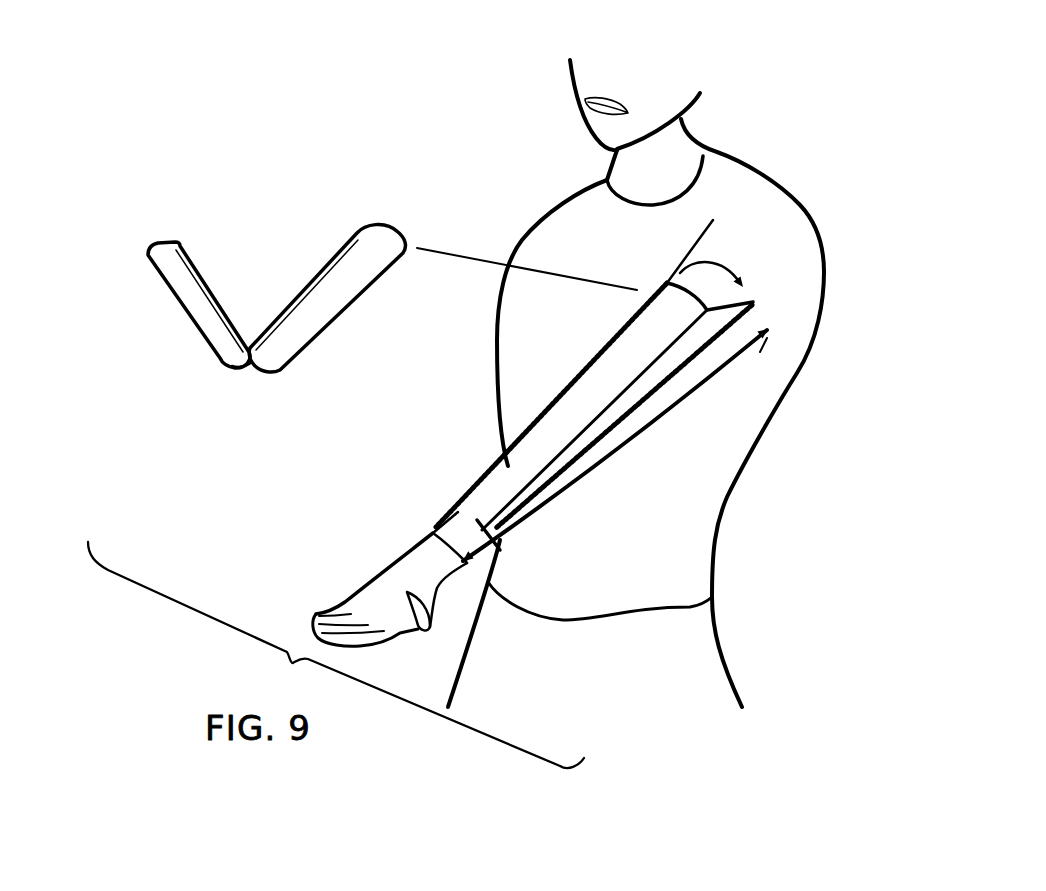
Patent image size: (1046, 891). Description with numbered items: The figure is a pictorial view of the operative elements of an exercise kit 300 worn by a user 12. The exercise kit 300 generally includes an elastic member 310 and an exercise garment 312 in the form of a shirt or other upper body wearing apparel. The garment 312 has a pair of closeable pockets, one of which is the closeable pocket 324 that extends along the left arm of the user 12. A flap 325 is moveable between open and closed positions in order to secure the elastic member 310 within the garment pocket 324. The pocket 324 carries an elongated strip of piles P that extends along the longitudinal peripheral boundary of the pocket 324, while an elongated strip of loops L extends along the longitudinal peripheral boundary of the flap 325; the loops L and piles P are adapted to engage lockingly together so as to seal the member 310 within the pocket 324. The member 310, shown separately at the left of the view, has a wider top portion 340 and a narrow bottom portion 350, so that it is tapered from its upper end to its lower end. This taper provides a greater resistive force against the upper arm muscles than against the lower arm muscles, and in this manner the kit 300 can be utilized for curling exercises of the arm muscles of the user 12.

The user 12 is at (673, 147).
The exercise kit 300 is at (243, 241).
The elastic member 310 is at (196, 370).
The exercise garment 312 is at (482, 432).
The closeable pocket 324 is at (771, 330).
The flap 325 is at (630, 408).
The wider top portion 340 is at (360, 246).
The narrow bottom portion 350 is at (166, 258).
The elongated strip of loops L is at (604, 347).
The elongated strip of piles P is at (757, 298).